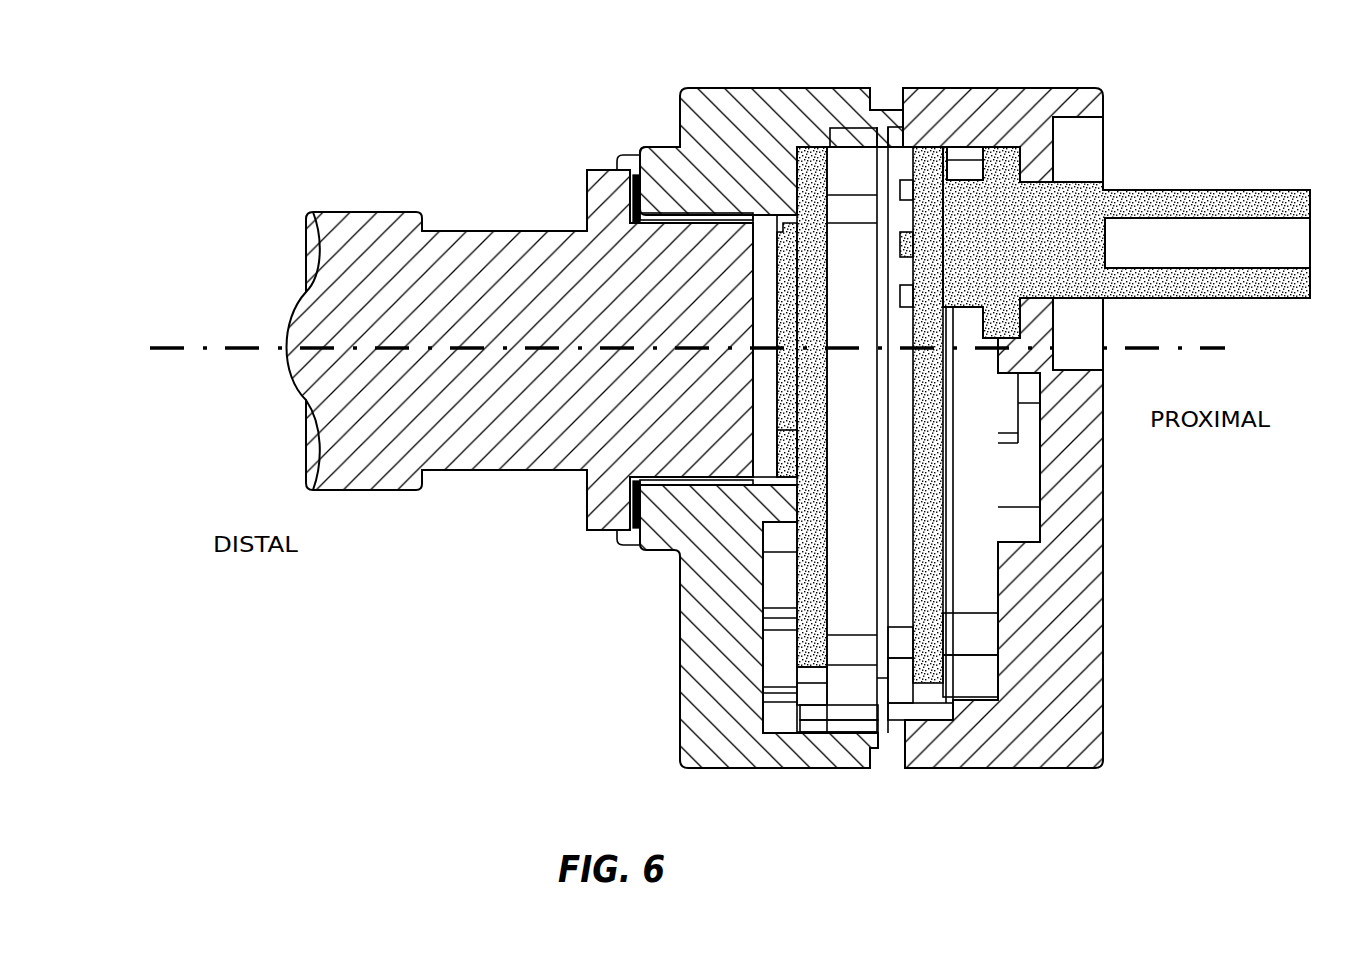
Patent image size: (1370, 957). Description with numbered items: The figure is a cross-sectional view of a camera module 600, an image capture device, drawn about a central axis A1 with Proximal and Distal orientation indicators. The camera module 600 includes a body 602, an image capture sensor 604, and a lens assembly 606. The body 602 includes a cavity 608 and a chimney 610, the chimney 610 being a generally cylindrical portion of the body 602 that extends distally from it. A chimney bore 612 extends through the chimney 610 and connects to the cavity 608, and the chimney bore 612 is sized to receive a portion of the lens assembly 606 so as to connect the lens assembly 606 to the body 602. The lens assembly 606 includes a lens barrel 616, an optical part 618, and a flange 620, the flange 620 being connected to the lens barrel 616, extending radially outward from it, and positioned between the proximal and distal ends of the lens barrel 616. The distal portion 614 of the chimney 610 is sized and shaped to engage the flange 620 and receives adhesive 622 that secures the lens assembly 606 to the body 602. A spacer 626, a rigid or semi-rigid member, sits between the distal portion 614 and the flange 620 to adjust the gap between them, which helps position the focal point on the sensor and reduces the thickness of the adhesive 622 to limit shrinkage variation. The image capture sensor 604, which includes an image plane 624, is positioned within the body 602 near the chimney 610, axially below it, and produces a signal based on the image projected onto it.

The camera module 600 is at (718, 399).
The body 602 is at (767, 399).
The image capture sensor 604 is at (788, 403).
The lens assembly 606 is at (475, 314).
The cavity 608 is at (763, 218).
The chimney 610 is at (662, 145).
The chimney bore 612 is at (668, 213).
The distal portion 614 is at (650, 538).
The lens barrel 616 is at (470, 245).
The optical part 618 is at (305, 402).
The flange 620 is at (580, 180).
The adhesive 622 is at (628, 150).
The image plane 624 is at (778, 438).
The spacer 626 is at (638, 222).
The axis A1 is at (165, 340).